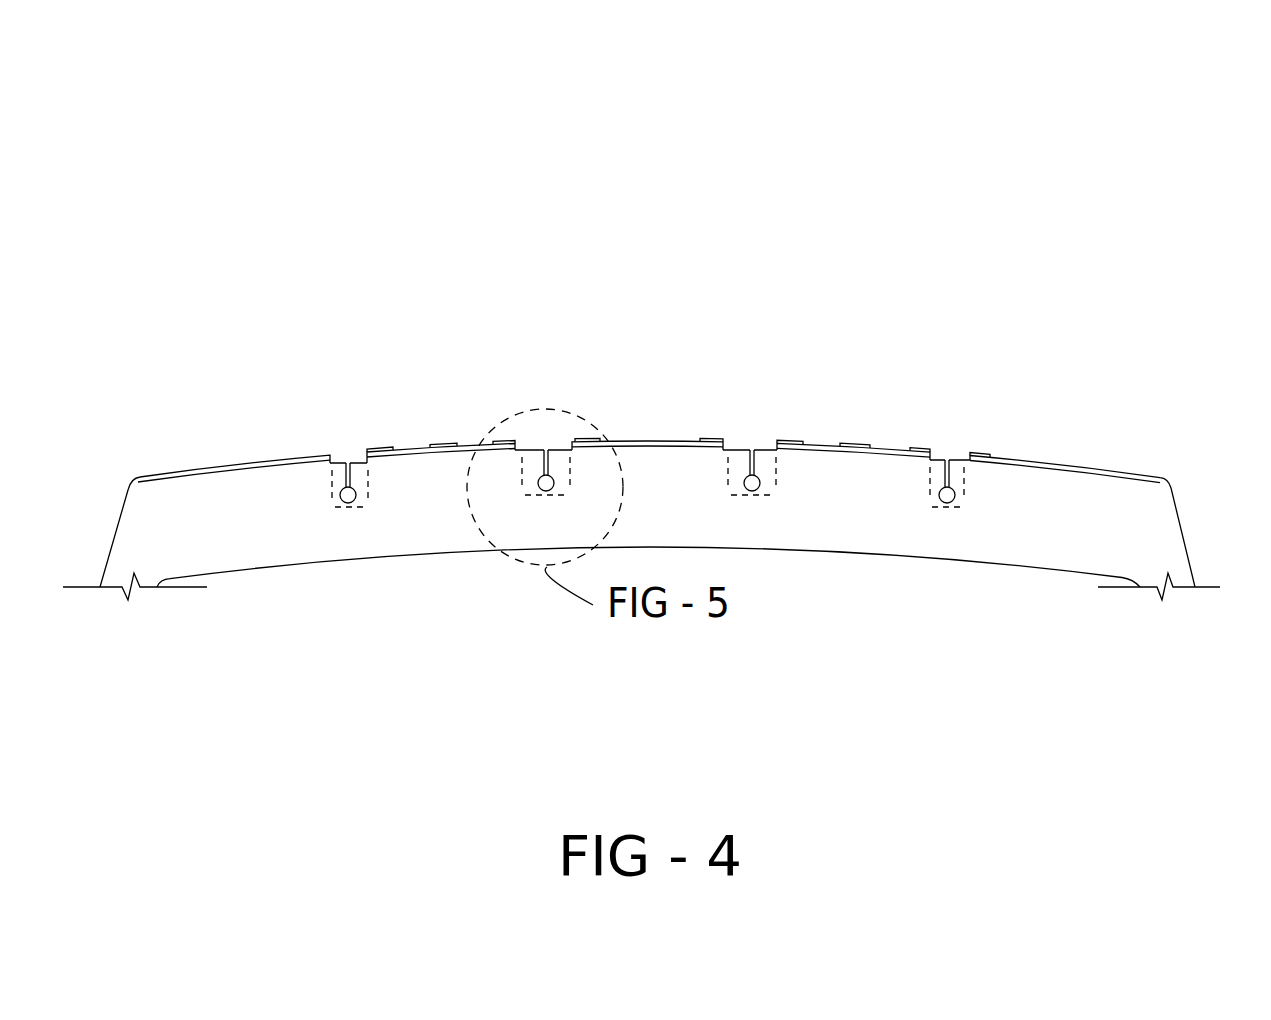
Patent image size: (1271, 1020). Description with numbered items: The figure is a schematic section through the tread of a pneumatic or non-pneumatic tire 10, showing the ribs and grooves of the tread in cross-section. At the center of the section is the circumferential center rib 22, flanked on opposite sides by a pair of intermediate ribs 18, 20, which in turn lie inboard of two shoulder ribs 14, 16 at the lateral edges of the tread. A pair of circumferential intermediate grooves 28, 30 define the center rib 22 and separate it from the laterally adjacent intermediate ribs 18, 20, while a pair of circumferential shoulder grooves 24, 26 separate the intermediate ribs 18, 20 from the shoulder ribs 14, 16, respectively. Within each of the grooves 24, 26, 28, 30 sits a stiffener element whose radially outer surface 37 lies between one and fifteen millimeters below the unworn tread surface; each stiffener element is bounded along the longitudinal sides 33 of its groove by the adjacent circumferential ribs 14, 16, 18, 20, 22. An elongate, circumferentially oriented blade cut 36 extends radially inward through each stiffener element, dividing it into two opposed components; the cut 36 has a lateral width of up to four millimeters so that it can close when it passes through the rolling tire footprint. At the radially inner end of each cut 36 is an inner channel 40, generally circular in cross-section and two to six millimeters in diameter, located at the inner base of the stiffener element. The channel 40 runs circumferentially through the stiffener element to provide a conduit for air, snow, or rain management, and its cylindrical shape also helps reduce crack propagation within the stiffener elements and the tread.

The tire 10 is at (217, 193).
The shoulder rib 14 is at (228, 457).
The shoulder rib 16 is at (1058, 457).
The intermediate rib 18 is at (470, 440).
The intermediate rib 20 is at (887, 443).
The center rib 22 is at (670, 433).
The shoulder groove 24 is at (337, 427).
The shoulder groove 26 is at (960, 443).
The intermediate groove 28 is at (528, 433).
The intermediate groove 30 is at (773, 427).
The longitudinal sides 33 is at (337, 493).
The blade cut 36 is at (362, 460).
The radially outer surface 37 is at (340, 460).
The inner channel 40 is at (347, 505).